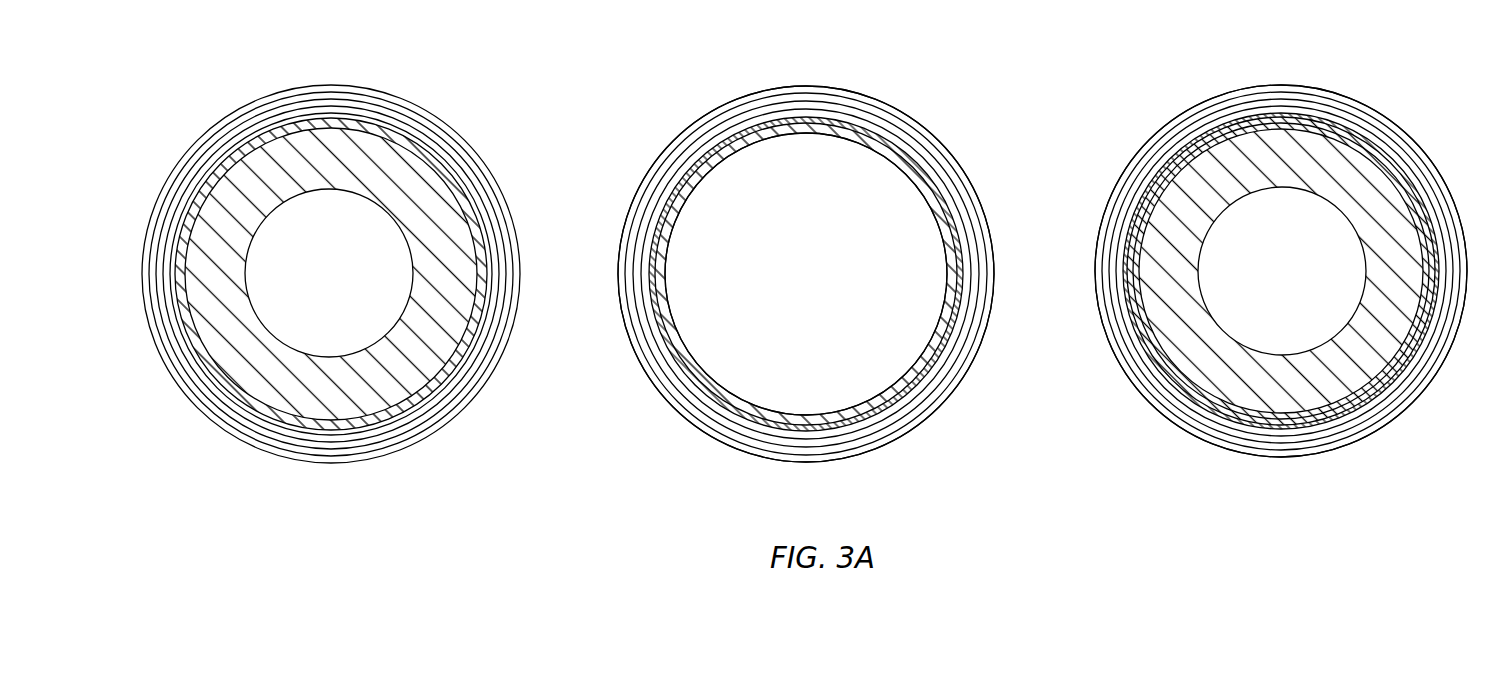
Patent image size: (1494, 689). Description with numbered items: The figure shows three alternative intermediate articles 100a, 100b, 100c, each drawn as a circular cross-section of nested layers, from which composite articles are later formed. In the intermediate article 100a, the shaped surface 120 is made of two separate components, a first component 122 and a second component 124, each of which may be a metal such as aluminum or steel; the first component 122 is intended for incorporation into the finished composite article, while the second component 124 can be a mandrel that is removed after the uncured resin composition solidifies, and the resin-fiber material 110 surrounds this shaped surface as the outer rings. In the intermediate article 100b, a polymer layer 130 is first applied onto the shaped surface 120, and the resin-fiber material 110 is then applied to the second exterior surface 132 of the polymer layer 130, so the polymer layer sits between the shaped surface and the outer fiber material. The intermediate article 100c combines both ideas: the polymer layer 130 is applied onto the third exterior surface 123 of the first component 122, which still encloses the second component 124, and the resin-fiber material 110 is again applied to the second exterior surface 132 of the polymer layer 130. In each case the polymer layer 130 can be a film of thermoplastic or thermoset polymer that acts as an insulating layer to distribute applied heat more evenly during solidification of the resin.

The intermediate article 100a is at (184, 104).
The intermediate article 100b is at (666, 95).
The intermediate article 100c is at (1146, 97).
The resin-fiber material 110 is at (172, 346).
The shaped surface 120 is at (693, 373).
The first component 122 is at (238, 390).
The third exterior surface 123 is at (1280, 445).
The second component 124 is at (250, 338).
The polymer layer 130 is at (710, 397).
The second exterior surface 132 is at (667, 202).